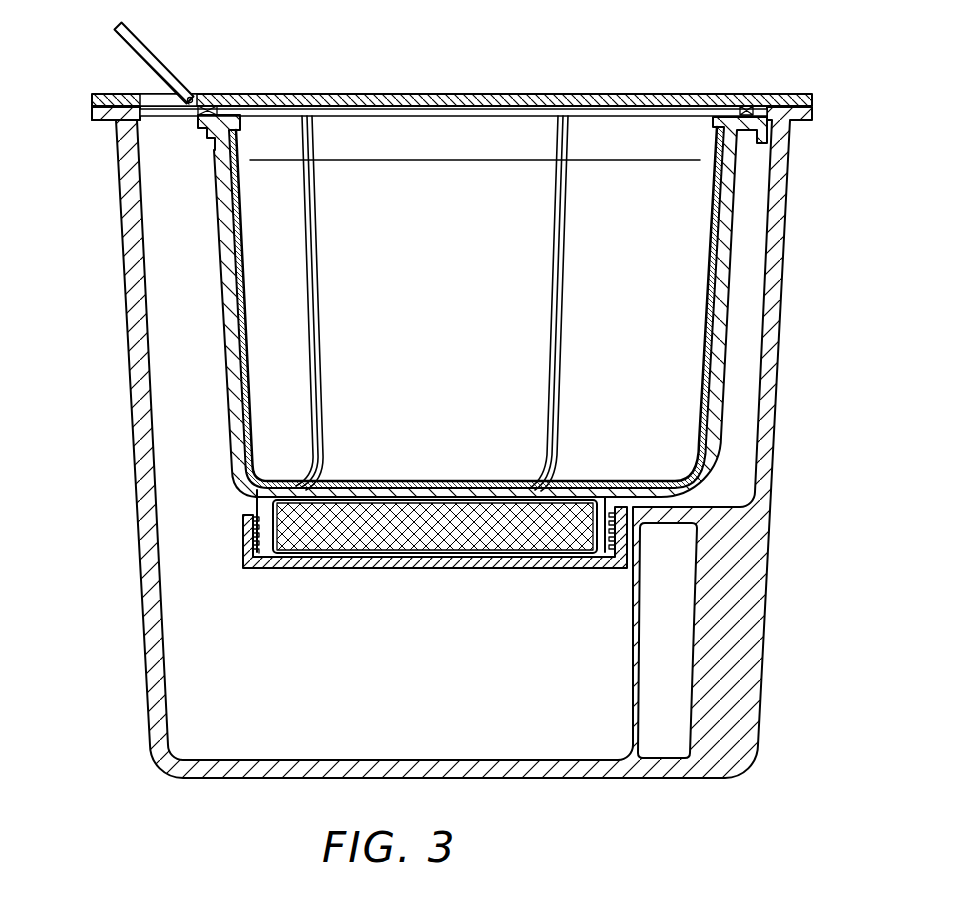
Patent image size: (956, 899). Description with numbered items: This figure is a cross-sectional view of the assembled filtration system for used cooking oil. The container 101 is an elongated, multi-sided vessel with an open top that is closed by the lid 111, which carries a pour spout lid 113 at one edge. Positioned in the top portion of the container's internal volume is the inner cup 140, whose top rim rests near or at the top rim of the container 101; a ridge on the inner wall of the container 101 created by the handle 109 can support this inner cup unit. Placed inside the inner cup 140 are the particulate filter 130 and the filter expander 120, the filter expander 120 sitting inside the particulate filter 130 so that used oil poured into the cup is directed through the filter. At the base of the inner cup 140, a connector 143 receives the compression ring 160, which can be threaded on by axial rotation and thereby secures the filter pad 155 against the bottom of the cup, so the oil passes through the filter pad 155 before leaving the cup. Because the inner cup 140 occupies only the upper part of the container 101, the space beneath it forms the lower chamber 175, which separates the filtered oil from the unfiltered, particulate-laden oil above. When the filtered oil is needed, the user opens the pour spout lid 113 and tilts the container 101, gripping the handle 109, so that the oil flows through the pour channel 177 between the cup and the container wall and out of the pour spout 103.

The container 101 is at (143, 660).
The pour spout 103 is at (97, 128).
The handle 109 is at (740, 612).
The lid 111 is at (660, 93).
The pour spout lid 113 is at (168, 70).
The filter expander 120 is at (445, 128).
The particulate filter 130 is at (717, 197).
The inner cup 140 is at (228, 428).
The connector 143 is at (253, 510).
The filter pad 155 is at (452, 536).
The compression ring 160 is at (353, 570).
The lower chamber 175 is at (445, 701).
The pour channel 177 is at (200, 363).